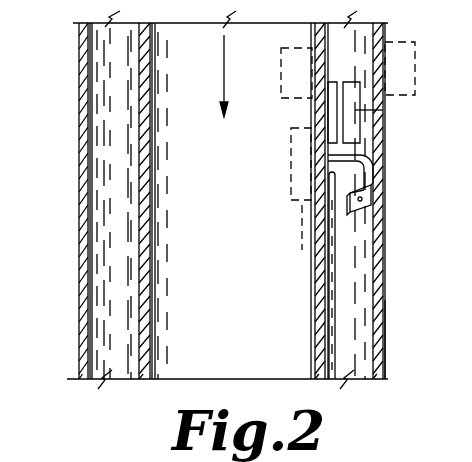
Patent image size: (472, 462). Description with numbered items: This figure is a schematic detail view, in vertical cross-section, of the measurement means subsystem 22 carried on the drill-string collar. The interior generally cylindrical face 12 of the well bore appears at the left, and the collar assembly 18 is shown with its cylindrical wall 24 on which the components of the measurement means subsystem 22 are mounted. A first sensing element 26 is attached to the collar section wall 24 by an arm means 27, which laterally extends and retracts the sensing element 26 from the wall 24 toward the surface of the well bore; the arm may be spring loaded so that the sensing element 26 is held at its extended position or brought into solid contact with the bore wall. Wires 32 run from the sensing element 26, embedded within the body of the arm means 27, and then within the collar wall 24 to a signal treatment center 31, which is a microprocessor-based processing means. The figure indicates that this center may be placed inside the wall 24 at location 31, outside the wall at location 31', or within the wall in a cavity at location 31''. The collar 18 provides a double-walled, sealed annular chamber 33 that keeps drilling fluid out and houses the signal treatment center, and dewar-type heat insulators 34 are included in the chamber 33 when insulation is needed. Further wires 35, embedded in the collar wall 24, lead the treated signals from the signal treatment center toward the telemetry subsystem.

The interior cylindrical face 12 is at (194, 200).
The collar assembly 18 is at (79, 52).
The measurement means subsystem 22 is at (387, 352).
The collar section wall 24 is at (383, 250).
The first sensing element 26 is at (368, 200).
The arm means 27 is at (375, 178).
The signal treatment center 31 is at (286, 49).
The signal treatment center location outside wall 31' is at (428, 59).
The signal treatment center location within wall 31'' is at (399, 124).
The wires 32 is at (343, 158).
The annular chamber 33 is at (333, 258).
The dewar-type heat insulators 34 is at (330, 115).
The further wires 35 is at (331, 308).